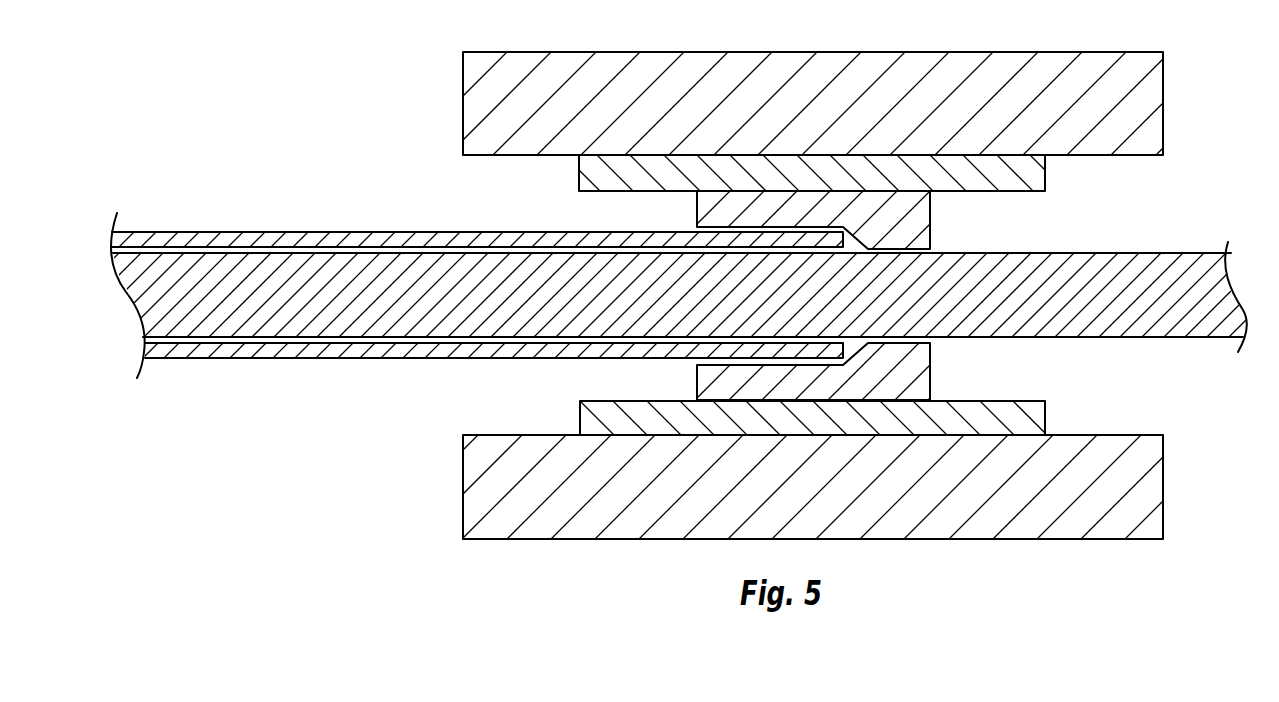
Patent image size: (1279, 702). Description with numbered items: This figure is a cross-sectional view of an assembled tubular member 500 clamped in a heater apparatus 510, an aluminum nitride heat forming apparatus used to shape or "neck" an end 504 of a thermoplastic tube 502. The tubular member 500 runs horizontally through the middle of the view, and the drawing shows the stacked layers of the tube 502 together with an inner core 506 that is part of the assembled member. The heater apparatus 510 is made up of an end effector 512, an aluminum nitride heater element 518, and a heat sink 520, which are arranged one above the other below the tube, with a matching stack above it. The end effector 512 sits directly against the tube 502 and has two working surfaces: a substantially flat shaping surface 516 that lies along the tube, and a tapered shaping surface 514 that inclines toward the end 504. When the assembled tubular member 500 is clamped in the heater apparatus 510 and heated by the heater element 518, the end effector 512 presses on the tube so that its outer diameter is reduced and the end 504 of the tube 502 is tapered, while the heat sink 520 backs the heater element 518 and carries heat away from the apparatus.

The assembled tubular member 500 is at (292, 162).
The thermoplastic tube 502 is at (410, 232).
The end 504 is at (868, 249).
The substrate 506 is at (1093, 267).
The heater apparatus 510 is at (423, 363).
The end effector 512 is at (922, 381).
The tapered shaping surface 514 is at (868, 343).
The substantially flat shaping surface 516 is at (753, 366).
The aluminum nitride heater element 518 is at (1047, 407).
The heat sink 520 is at (1157, 488).